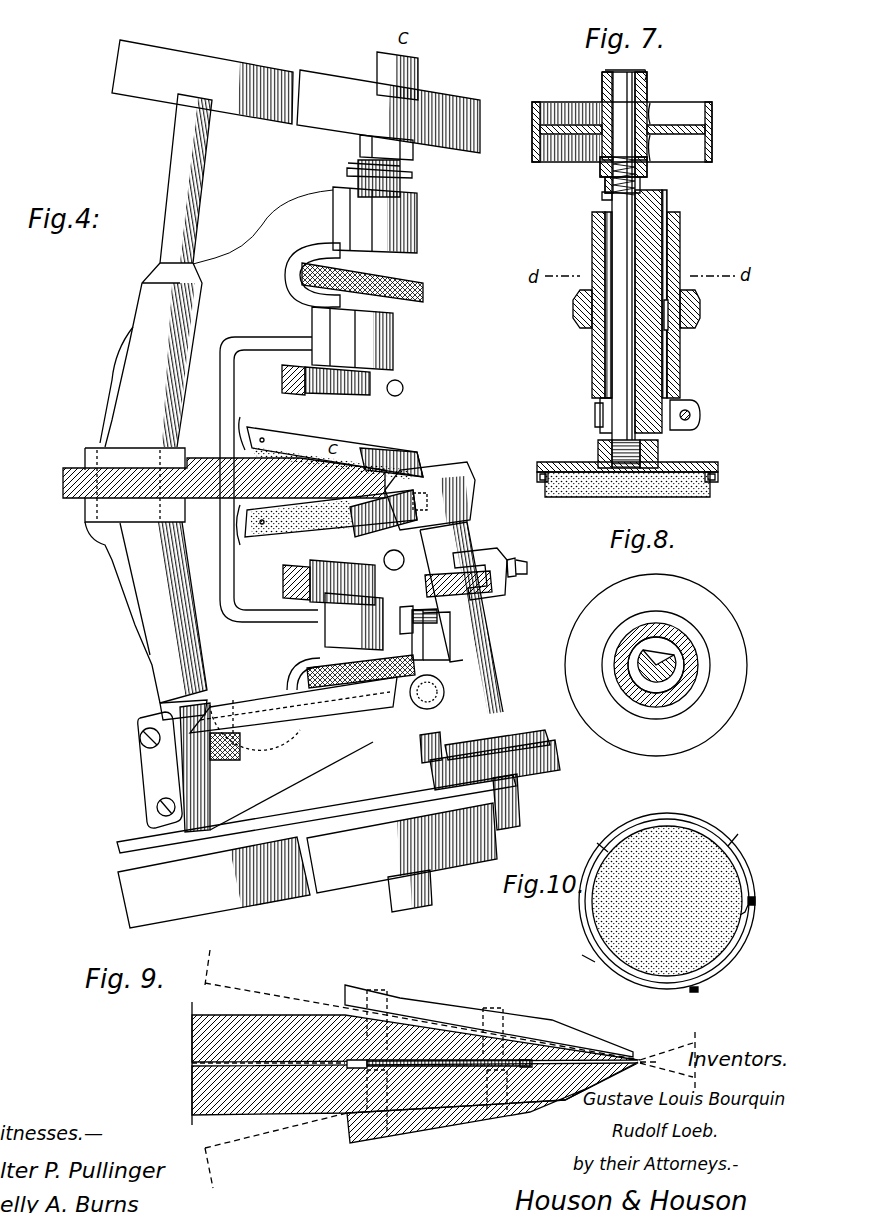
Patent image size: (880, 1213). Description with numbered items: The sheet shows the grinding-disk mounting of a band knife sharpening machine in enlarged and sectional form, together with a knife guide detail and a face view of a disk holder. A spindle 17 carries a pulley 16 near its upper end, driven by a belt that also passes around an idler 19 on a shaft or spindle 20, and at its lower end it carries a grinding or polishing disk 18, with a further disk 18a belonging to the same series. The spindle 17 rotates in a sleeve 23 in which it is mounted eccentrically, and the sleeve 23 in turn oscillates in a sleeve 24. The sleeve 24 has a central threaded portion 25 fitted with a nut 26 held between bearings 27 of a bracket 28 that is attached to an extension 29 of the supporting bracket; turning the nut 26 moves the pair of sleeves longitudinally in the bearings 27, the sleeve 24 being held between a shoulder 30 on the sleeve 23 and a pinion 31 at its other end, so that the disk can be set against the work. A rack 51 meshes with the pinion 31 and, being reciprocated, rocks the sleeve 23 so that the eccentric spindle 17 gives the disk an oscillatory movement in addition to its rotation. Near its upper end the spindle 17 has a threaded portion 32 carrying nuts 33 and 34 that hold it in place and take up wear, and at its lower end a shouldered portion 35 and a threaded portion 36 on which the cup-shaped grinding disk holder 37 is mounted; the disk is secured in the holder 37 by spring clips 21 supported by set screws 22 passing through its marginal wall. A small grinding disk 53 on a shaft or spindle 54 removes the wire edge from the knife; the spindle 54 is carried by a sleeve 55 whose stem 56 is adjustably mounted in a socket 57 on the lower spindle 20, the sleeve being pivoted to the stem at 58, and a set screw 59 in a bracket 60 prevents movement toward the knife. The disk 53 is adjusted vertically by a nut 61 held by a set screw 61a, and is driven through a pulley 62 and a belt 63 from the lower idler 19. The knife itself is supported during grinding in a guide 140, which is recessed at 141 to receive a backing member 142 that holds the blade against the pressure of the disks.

In FIG. 4, the pulley 16 is at (397, 481).
In FIG. 7, the pulley 16 is at (712, 143).
In FIG. 4, the spindle 17 is at (412, 58).
In FIG. 7, the spindle 17 is at (612, 206).
In FIG. 8, the spindle 17 is at (638, 670).
In FIG. 4, the grinding or polishing disk 18 is at (331, 441).
In FIG. 7, the grinding or polishing disk 18 is at (607, 497).
In FIG. 10, the grinding or polishing disk 18 is at (592, 905).
In FIG. 9, the grinding or polishing disk 18 is at (415, 1050).
In FIG. 4, the grinding or polishing disk 18a is at (327, 524).
In FIG. 9, the grinding or polishing disk 18a is at (422, 1069).
In FIG. 4, the idler 19 is at (211, 484).
In FIG. 4, the shaft or spindle 20 is at (176, 197).
In FIG. 7, the spring clip 21 is at (712, 484).
In FIG. 10, the spring clip 21 is at (606, 848).
In FIG. 7, the set screw 22 is at (720, 478).
In FIG. 10, the set screw 22 is at (772, 898).
In FIG. 7, the sleeve 23 is at (664, 198).
In FIG. 8, the sleeve 23 is at (703, 643).
In FIG. 4, the sleeve 24 is at (340, 187).
In FIG. 7, the sleeve 24 is at (668, 208).
In FIG. 8, the sleeve 24 is at (684, 665).
In FIG. 7, the threaded portion 25 is at (670, 320).
In FIG. 4, the nut 26 is at (425, 293).
In FIG. 7, the nut 26 is at (700, 303).
In FIG. 8, the nut 26 is at (671, 612).
In FIG. 4, the bearing 27 is at (410, 258).
In FIG. 7, the bearing 27 is at (680, 245).
In FIG. 8, the bearing 27 is at (696, 696).
In FIG. 4, the bracket 28 is at (266, 440).
In FIG. 4, the extension 29 is at (68, 484).
In FIG. 4, the shoulder 30 is at (348, 168).
In FIG. 7, the shoulder 30 is at (604, 195).
In FIG. 4, the pinion 31 is at (305, 400).
In FIG. 7, the pinion 31 is at (595, 414).
In FIG. 7, the threaded portion 32 is at (638, 162).
In FIG. 4, the nut 33 is at (413, 150).
In FIG. 7, the nut 33 is at (647, 166).
In FIG. 4, the nut 34 is at (412, 174).
In FIG. 7, the nut 34 is at (645, 180).
In FIG. 7, the shouldered portion 35 is at (655, 435).
In FIG. 7, the threaded portion 36 is at (608, 453).
In FIG. 4, the grinding disk holder 37 is at (389, 480).
In FIG. 7, the grinding disk holder 37 is at (708, 462).
In FIG. 8, the grinding disk holder 37 is at (656, 665).
In FIG. 10, the grinding disk holder 37 is at (745, 853).
In FIG. 4, the rack 51 is at (282, 380).
In FIG. 4, the small grinding disk 53 is at (468, 470).
In FIG. 4, the shaft or spindle 54 is at (519, 802).
In FIG. 4, the sleeve 55 is at (461, 618).
In FIG. 4, the stem 56 is at (262, 710).
In FIG. 4, the socket 57 is at (233, 708).
In FIG. 4, the pivot 58 is at (445, 690).
In FIG. 4, the set screw 59 is at (433, 612).
In FIG. 4, the bracket 60 is at (415, 643).
In FIG. 4, the nut 61 is at (442, 574).
In FIG. 4, the set screw 61a is at (533, 567).
In FIG. 4, the pulley 62 is at (560, 768).
In FIG. 4, the belt 63 is at (325, 805).
In FIG. 9, the guide 140 is at (303, 1030).
In FIG. 9, the recess 141 is at (385, 1025).
In FIG. 9, the backing member 142 is at (477, 1045).